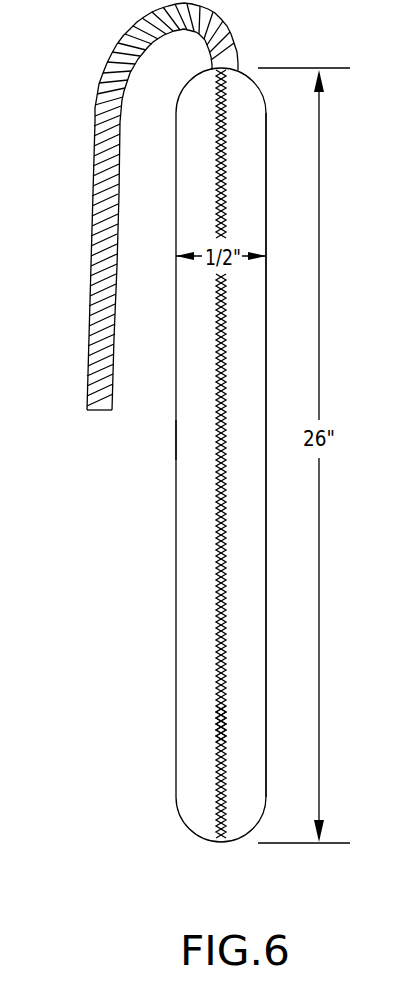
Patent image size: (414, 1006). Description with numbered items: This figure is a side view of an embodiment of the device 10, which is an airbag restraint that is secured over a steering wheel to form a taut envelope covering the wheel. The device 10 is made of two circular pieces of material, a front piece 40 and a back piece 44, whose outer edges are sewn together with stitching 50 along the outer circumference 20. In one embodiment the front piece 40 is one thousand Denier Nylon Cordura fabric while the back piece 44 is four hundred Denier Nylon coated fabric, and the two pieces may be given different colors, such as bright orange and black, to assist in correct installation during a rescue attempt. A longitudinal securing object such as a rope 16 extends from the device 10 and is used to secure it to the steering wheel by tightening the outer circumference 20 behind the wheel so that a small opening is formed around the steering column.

The device 10 is at (165, 648).
The rope 16 is at (93, 154).
The outer circumference 20 is at (195, 540).
The front piece 40 is at (266, 387).
The back piece 44 is at (176, 440).
The stitching 50 is at (200, 718).